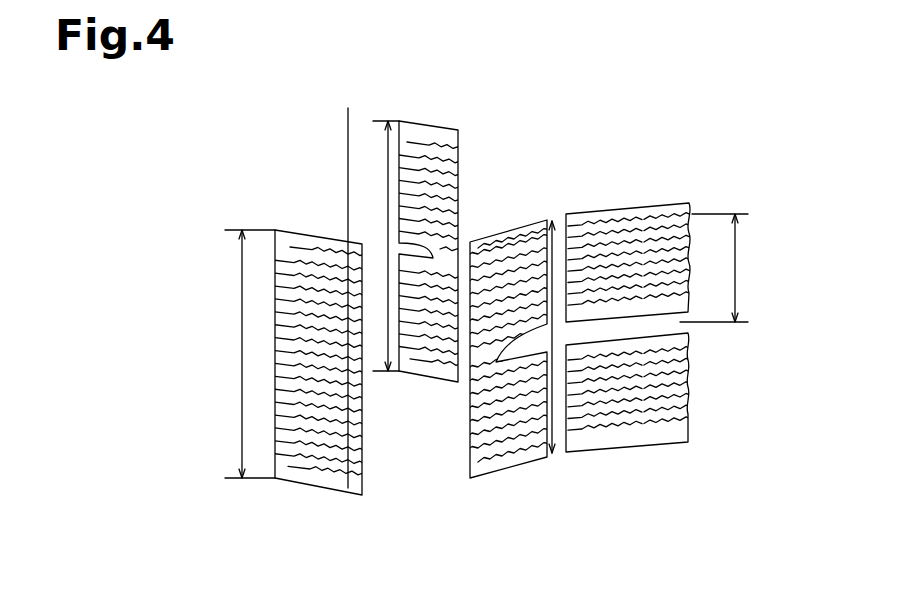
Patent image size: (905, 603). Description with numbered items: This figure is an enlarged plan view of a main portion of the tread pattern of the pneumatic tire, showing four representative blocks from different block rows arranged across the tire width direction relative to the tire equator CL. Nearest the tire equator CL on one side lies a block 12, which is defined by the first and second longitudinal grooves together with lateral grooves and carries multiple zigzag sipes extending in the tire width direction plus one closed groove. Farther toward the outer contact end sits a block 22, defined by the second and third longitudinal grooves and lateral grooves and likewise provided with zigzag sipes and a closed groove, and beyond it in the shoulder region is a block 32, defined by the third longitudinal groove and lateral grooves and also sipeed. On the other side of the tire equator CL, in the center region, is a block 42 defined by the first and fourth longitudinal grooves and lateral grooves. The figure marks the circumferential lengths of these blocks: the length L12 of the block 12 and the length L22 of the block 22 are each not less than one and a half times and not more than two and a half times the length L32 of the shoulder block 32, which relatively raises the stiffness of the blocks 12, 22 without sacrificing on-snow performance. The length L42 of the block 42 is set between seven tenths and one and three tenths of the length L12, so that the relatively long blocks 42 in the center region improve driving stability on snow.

The block 12 is at (443, 132).
The block 22 is at (505, 238).
The block 32 is at (663, 207).
The block 42 is at (298, 240).
The tire equator CL is at (346, 282).
The length of block 12 in the tire circumferential direction L12 is at (375, 246).
The length of block 22 in the tire circumferential direction L22 is at (553, 427).
The length of block 32 in the tire circumferential direction L32 is at (731, 268).
The length of block 42 in the tire circumferential direction L42 is at (236, 354).